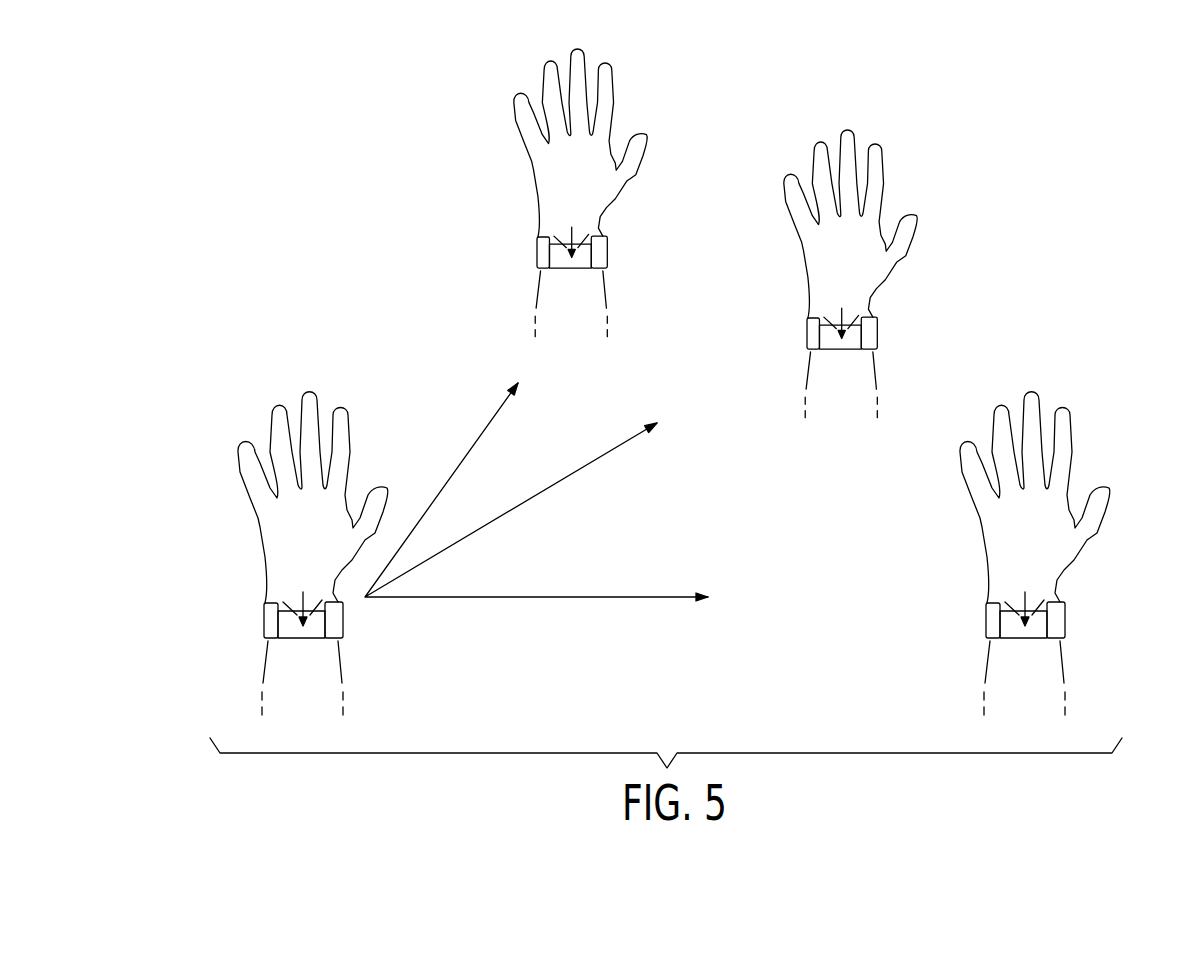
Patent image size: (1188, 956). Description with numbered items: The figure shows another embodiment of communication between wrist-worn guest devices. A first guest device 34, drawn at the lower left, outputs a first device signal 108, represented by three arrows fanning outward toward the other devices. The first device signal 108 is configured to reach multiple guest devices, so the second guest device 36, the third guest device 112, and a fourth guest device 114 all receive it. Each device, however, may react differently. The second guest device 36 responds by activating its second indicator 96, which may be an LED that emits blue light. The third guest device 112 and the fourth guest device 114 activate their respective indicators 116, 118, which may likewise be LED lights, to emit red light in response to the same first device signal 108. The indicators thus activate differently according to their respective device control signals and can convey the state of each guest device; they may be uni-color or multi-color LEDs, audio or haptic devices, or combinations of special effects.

The first guest device 34 is at (265, 608).
The second guest device 36 is at (607, 250).
The second indicator 96 is at (552, 256).
The first device signal 108 is at (457, 468).
The third guest device 112 is at (875, 333).
The fourth guest device 114 is at (1063, 620).
The indicator of third guest device 116 is at (820, 342).
The indicator of fourth guest device 118 is at (1002, 623).